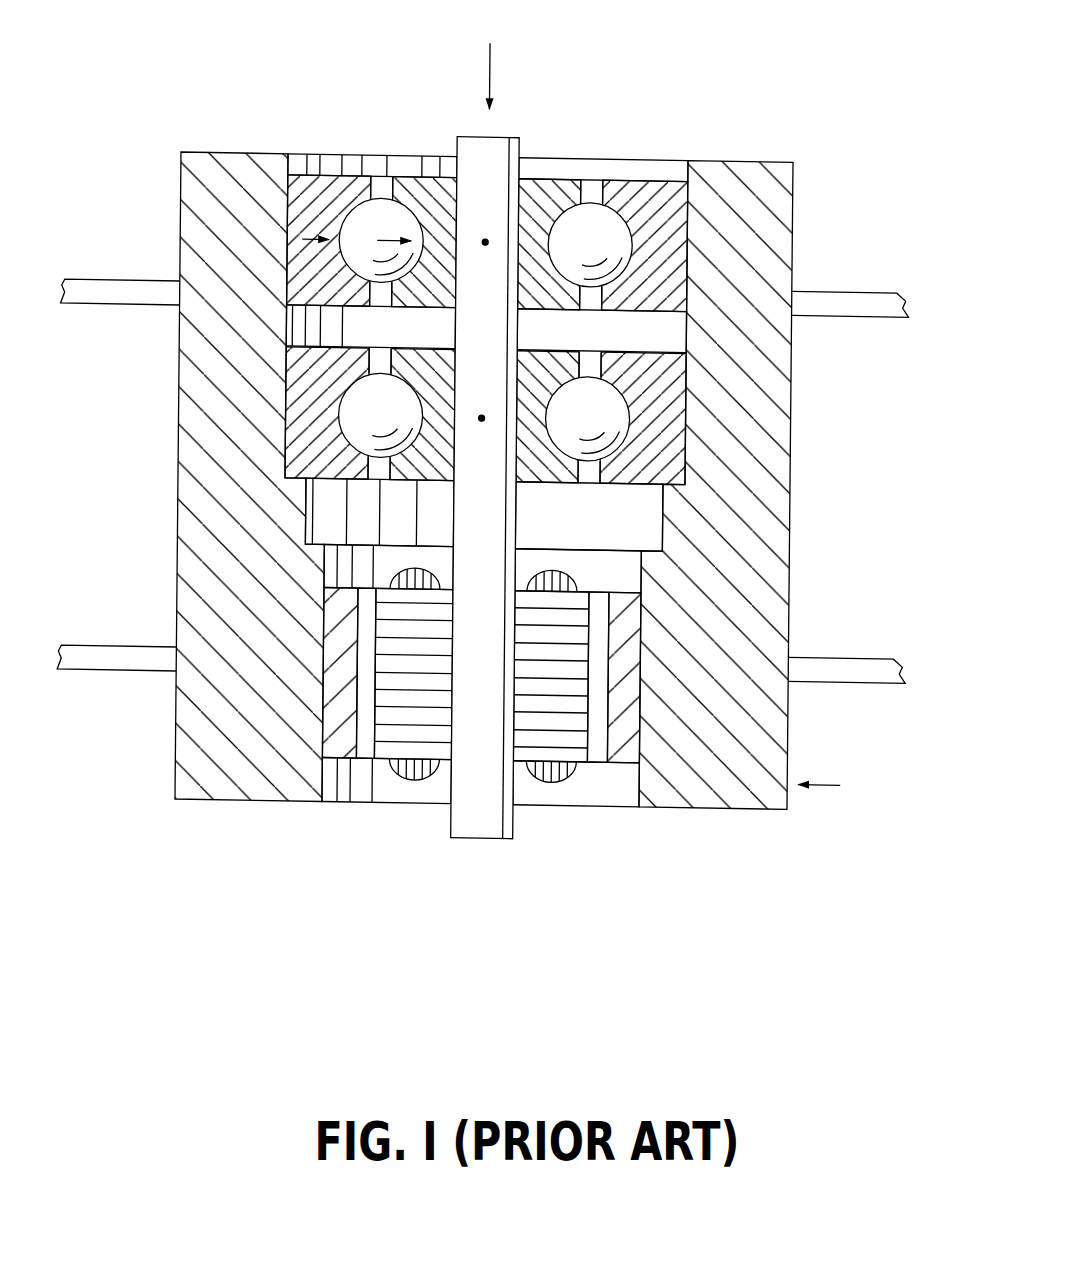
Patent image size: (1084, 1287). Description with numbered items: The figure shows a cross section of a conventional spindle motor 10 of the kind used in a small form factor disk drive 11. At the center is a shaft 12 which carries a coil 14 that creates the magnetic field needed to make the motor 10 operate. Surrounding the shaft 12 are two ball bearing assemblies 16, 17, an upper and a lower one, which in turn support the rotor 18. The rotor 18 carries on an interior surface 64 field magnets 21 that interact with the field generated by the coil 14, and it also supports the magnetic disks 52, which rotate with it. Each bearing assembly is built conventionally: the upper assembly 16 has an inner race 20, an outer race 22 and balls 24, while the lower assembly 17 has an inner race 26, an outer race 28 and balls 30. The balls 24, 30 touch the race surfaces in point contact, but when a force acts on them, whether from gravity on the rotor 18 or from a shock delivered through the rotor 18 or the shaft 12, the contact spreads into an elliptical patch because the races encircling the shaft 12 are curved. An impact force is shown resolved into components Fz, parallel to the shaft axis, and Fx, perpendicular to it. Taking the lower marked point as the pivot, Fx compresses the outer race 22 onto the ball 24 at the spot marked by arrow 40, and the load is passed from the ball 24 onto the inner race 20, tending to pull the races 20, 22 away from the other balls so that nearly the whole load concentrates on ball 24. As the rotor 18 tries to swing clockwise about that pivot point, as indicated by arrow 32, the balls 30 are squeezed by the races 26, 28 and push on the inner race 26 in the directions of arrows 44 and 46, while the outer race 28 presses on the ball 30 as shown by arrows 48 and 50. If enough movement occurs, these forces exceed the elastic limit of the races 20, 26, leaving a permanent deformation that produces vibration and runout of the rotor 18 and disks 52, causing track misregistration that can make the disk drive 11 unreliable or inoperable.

The spindle motor 10 is at (912, 175).
The disk drive 11 is at (479, 536).
The shaft 12 is at (521, 134).
The coil 14 is at (426, 740).
The ball bearing assembly 16 is at (604, 118).
The ball bearing assembly 17 is at (624, 337).
The rotor 18 is at (184, 500).
The inner race 20 is at (440, 171).
The field magnets 21 is at (347, 731).
The outer race 22 is at (336, 185).
The ball 24 is at (374, 212).
The inner race 26 is at (432, 363).
The outer race 28 is at (364, 393).
The ball 30 is at (385, 365).
The arrow 32 is at (675, 877).
The arrow 40 is at (303, 237).
The arrow 44 is at (592, 414).
The arrow 46 is at (406, 390).
The arrow 48 is at (663, 371).
The arrow 50 is at (338, 448).
The disks 52 is at (130, 286).
The interior surface 64 is at (664, 512).